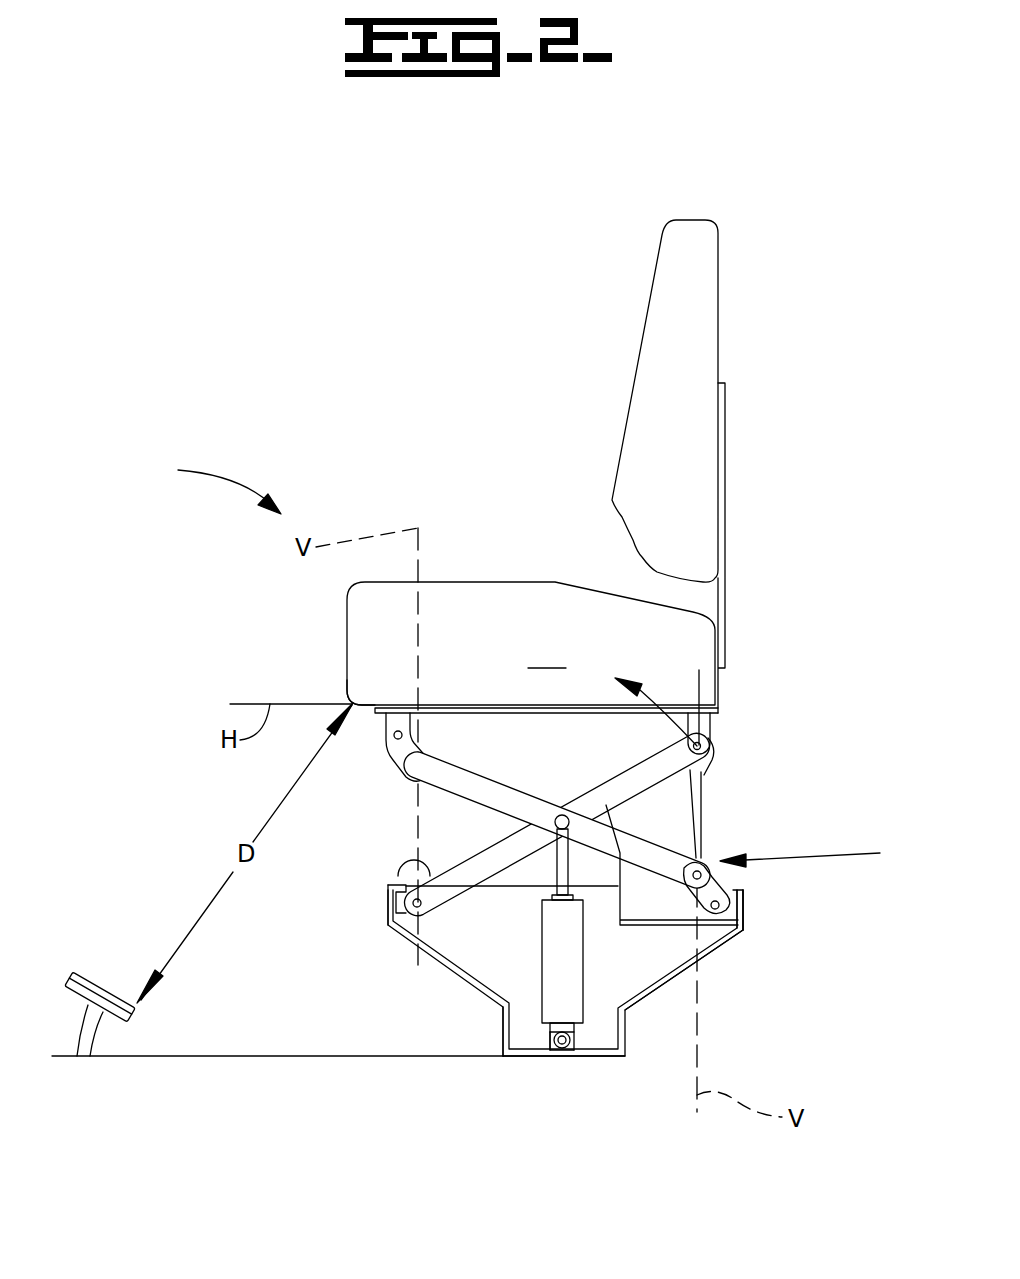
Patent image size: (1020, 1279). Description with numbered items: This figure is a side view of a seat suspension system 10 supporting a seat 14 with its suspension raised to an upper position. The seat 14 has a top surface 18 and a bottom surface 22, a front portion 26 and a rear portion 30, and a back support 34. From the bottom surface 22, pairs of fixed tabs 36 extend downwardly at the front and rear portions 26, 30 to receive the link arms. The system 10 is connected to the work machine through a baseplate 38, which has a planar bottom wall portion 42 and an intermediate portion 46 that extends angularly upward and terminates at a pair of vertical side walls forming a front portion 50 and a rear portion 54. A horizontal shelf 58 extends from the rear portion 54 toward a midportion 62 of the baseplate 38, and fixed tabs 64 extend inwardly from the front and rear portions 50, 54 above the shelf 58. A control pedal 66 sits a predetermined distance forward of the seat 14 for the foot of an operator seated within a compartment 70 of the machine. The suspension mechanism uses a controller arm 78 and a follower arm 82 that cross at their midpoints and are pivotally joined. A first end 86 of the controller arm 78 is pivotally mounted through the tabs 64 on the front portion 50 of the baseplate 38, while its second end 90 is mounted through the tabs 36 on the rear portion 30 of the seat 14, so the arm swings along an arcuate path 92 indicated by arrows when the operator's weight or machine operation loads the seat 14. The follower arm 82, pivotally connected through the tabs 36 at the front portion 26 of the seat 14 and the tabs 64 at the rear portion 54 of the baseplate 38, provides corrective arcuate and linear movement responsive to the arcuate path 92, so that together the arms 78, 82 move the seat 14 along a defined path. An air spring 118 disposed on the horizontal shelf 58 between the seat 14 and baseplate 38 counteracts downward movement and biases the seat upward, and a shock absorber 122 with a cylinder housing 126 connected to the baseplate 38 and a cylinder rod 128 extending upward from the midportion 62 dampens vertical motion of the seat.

The seat suspension system 10 is at (819, 854).
The seat 14 is at (547, 655).
The top surface 18 is at (458, 582).
The bottom surface 22 is at (592, 715).
The front portion 26 is at (360, 700).
The rear portion 30 is at (708, 687).
The back support 34 is at (700, 265).
The fixed tabs 36 is at (385, 772).
The baseplate 38 is at (607, 952).
The planar bottom wall portion 42 is at (598, 1043).
The intermediate portion 46 is at (652, 960).
The front portion 50 is at (385, 921).
The rear portion 54 is at (745, 900).
The horizontal shelf 58 is at (652, 932).
The midportion 62 is at (502, 930).
The fixed tabs 64 is at (383, 903).
The control pedal 66 is at (102, 977).
The compartment 70 is at (210, 486).
The controller arm 78 is at (477, 850).
The follower arm 82 is at (657, 830).
The first end 86 is at (412, 858).
The second end 90 is at (700, 775).
The arcuate path 92 is at (662, 692).
The air spring 118 is at (703, 812).
The shock absorber 122 is at (545, 1003).
The cylinder housing 126 is at (503, 1003).
The cylinder rod 128 is at (558, 863).